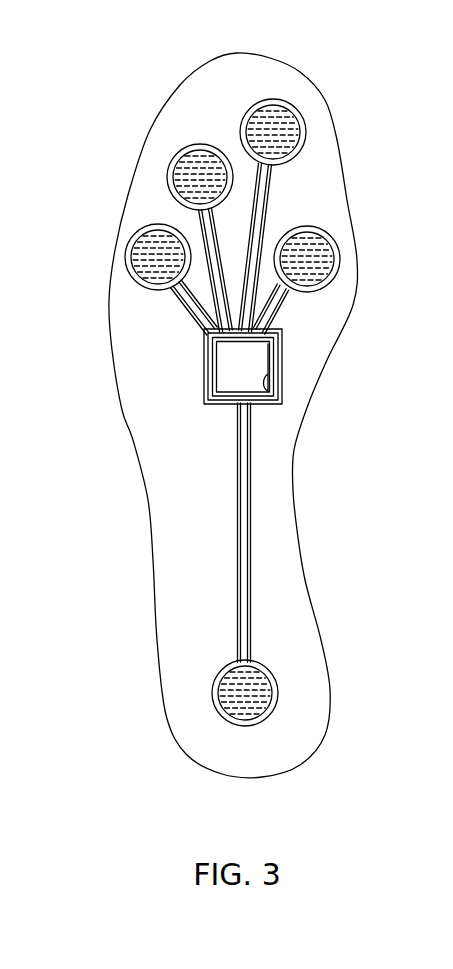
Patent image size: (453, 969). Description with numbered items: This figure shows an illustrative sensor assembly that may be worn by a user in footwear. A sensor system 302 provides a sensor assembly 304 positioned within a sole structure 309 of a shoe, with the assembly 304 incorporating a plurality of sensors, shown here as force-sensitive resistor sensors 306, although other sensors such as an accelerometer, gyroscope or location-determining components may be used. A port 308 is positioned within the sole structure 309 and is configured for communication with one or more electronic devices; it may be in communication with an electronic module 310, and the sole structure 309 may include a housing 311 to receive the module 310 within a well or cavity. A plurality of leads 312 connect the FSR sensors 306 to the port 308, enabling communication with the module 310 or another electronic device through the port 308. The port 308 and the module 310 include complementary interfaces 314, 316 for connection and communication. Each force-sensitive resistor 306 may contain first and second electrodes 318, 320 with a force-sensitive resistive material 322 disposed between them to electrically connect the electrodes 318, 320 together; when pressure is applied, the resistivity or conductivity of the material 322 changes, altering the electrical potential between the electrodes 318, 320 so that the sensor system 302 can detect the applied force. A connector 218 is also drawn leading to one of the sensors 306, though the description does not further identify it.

The wire 218 is at (255, 120).
The sensor system 302 is at (197, 403).
The sensor assembly 304 is at (260, 543).
The force-sensitive resistor sensor 306 is at (182, 145).
The port 308 is at (203, 368).
The sole structure 309 is at (157, 617).
The electronic module 310 is at (250, 383).
The housing 311 is at (203, 353).
The lead 312 is at (262, 232).
The interface 314 is at (282, 358).
The interface 316 is at (282, 395).
The first electrode 318 is at (220, 707).
The second electrode 320 is at (289, 103).
The force-sensitive resistive material 322 is at (302, 130).